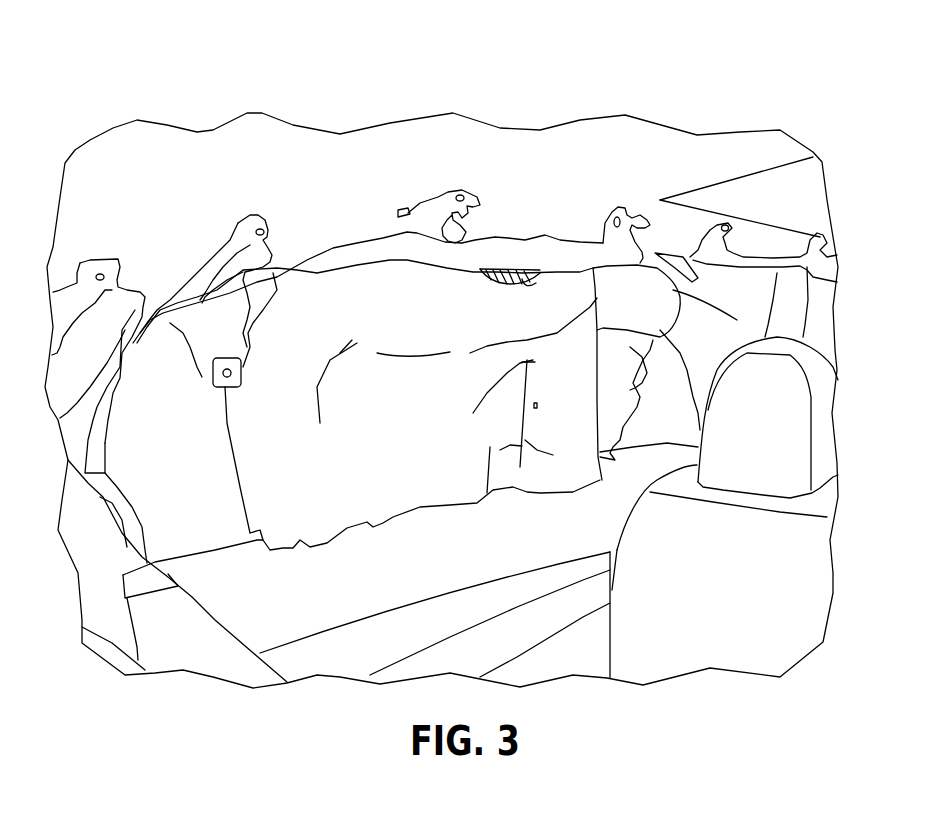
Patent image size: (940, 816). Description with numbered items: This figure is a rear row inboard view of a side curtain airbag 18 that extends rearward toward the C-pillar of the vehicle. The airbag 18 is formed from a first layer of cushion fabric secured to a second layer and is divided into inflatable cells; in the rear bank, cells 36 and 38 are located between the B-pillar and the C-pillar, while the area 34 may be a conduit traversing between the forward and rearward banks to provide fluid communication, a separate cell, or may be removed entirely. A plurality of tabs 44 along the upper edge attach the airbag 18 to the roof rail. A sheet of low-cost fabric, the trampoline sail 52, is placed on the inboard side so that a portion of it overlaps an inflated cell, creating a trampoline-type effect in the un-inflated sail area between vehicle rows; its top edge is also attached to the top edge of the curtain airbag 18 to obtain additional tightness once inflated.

The side curtain airbag 18 is at (485, 330).
The area or cell 34 is at (443, 305).
The cell 36 is at (287, 503).
The cell 38 is at (183, 530).
The tabs 44 is at (105, 267).
The trampoline sail 52 is at (418, 385).